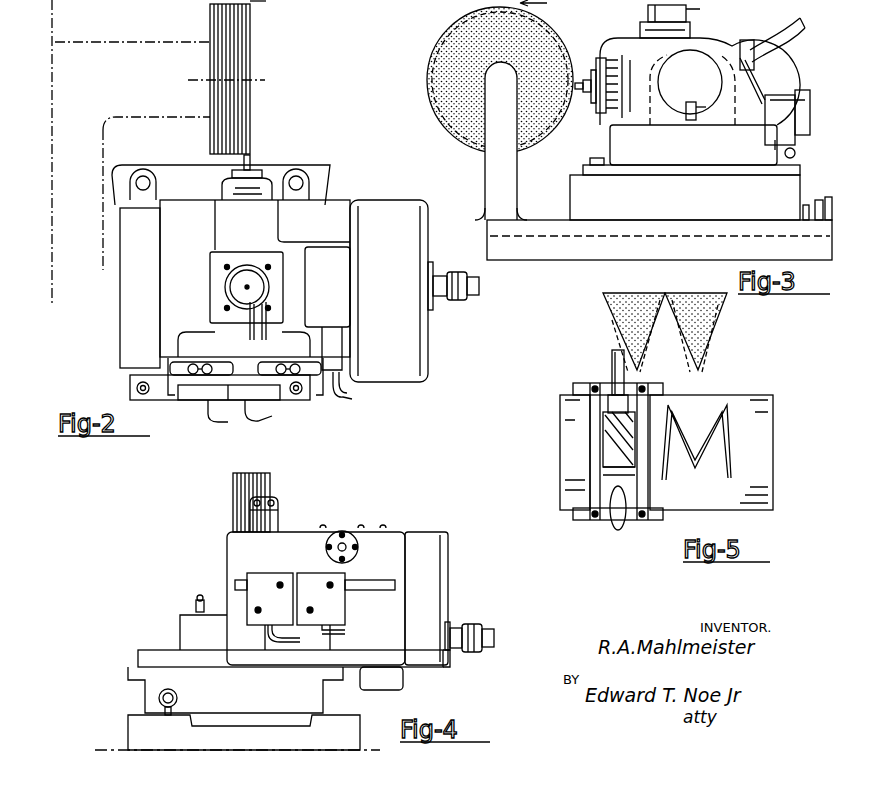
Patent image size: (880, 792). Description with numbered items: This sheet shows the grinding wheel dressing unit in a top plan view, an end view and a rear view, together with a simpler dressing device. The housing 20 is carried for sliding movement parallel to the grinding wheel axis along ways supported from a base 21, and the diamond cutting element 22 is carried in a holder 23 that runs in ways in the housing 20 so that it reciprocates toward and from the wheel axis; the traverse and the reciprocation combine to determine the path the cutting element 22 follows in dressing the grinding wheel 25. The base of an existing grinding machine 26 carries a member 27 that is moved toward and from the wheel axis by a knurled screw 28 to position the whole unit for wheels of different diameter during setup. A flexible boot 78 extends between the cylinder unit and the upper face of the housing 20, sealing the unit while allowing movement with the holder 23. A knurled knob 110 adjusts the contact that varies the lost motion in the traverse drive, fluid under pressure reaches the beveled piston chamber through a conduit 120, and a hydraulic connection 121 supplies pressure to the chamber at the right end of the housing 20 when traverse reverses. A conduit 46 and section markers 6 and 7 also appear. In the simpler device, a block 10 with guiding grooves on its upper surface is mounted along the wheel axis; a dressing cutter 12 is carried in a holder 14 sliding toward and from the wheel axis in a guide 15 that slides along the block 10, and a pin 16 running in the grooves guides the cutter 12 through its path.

In FIG. 3, the section line 6 is at (544, 8).
In FIG. 2, the section line 7 is at (270, 9).
In FIG. 5, the block 10 is at (760, 472).
In FIG. 5, the dressing cutter 12 is at (612, 360).
In FIG. 5, the holder 14 is at (612, 486).
In FIG. 5, the guide 15 is at (640, 503).
In FIG. 5, the pin 16 is at (620, 450).
In FIG. 2, the housing 20 is at (410, 357).
In FIG. 3, the housing 20 is at (770, 70).
In FIG. 4, the housing 20 is at (396, 545).
In FIG. 2, the base 21 is at (320, 178).
In FIG. 3, the base 21 is at (590, 170).
In FIG. 4, the base 21 is at (175, 656).
In FIG. 2, the diamond cutting element 22 is at (247, 165).
In FIG. 3, the diamond cutting element 22 is at (592, 72).
In FIG. 2, the holder 23 is at (258, 178).
In FIG. 3, the holder 23 is at (600, 72).
In FIG. 2, the grinding wheel 25 is at (237, 60).
In FIG. 3, the grinding wheel 25 is at (435, 78).
In FIG. 4, the grinding wheel 25 is at (266, 485).
In FIG. 3, the grinding machine 26 is at (596, 250).
In FIG. 4, the grinding machine 26 is at (353, 735).
In FIG. 3, the member 27 is at (580, 200).
In FIG. 4, the member 27 is at (314, 700).
In FIG. 3, the knurled screw 28 is at (826, 200).
In FIG. 4, the knurled screw 28 is at (158, 700).
In FIG. 2, the conduit 46 is at (350, 397).
In FIG. 3, the conduit 46 is at (779, 35).
In FIG. 4, the conduit 46 is at (344, 534).
In FIG. 3, the flexible boot 78 is at (692, 24).
In FIG. 4, the flexible boot 78 is at (277, 516).
In FIG. 2, the knurled knob 110 is at (458, 272).
In FIG. 4, the knurled knob 110 is at (474, 624).
In FIG. 4, the conduit 120 is at (448, 660).
In FIG. 4, the hydraulic connection 121 is at (195, 607).